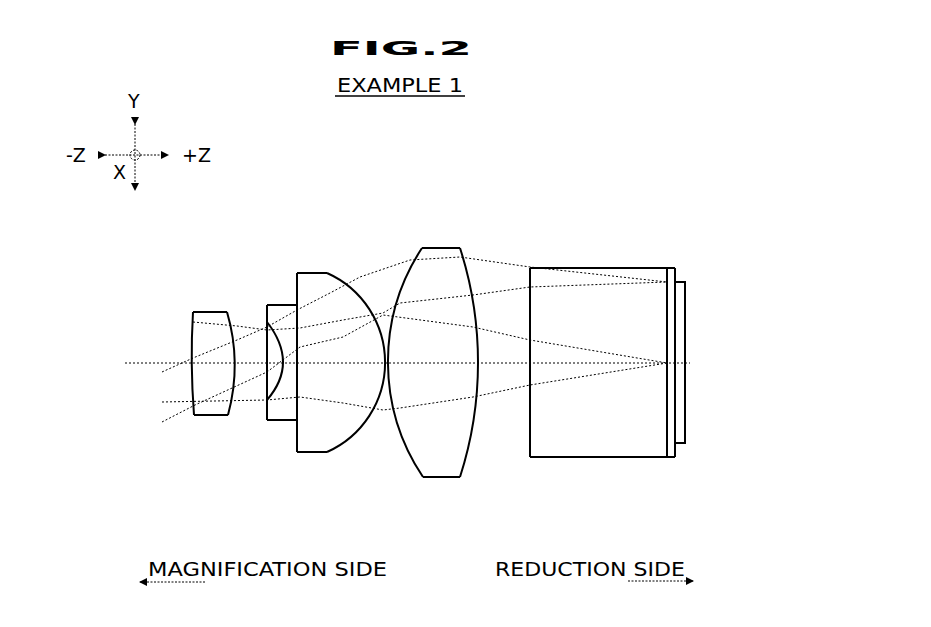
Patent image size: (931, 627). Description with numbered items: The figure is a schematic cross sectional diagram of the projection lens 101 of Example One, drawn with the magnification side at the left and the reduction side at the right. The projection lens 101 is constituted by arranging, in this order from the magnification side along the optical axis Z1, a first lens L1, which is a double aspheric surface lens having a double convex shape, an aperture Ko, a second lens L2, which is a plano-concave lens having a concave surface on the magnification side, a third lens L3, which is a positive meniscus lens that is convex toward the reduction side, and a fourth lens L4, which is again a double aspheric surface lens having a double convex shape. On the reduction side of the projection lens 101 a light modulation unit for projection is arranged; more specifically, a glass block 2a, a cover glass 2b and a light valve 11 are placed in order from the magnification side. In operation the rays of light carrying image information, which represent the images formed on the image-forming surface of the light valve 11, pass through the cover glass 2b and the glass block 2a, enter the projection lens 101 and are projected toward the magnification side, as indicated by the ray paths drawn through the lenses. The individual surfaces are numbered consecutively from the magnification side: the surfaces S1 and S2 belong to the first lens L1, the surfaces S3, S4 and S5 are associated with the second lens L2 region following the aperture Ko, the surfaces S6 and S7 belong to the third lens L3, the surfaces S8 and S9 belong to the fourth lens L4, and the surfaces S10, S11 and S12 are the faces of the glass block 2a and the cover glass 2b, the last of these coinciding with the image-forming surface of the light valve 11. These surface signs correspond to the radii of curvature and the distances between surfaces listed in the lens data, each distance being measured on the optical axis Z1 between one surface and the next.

The projection lens 101 is at (651, 131).
The first lens L1 is at (195, 346).
The second lens L2 is at (263, 368).
The third lens L3 is at (341, 368).
The fourth lens L4 is at (430, 368).
The aperture Ko is at (263, 368).
The optical axis Z1 is at (136, 360).
The glass block 2a is at (592, 363).
The cover glass 2b is at (695, 370).
The light valve 11 is at (702, 320).
The lens surface S1 is at (195, 403).
The lens surface S2 is at (222, 414).
The lens surface S3 is at (262, 398).
The lens surface S4 is at (286, 405).
The lens surface S5 is at (284, 407).
The lens surface S6 is at (310, 406).
The lens surface S7 is at (356, 396).
The lens surface S8 is at (403, 393).
The lens surface S9 is at (465, 393).
The lens surface S10 is at (539, 398).
The lens surface S11 is at (640, 389).
The lens surface S12 is at (695, 405).